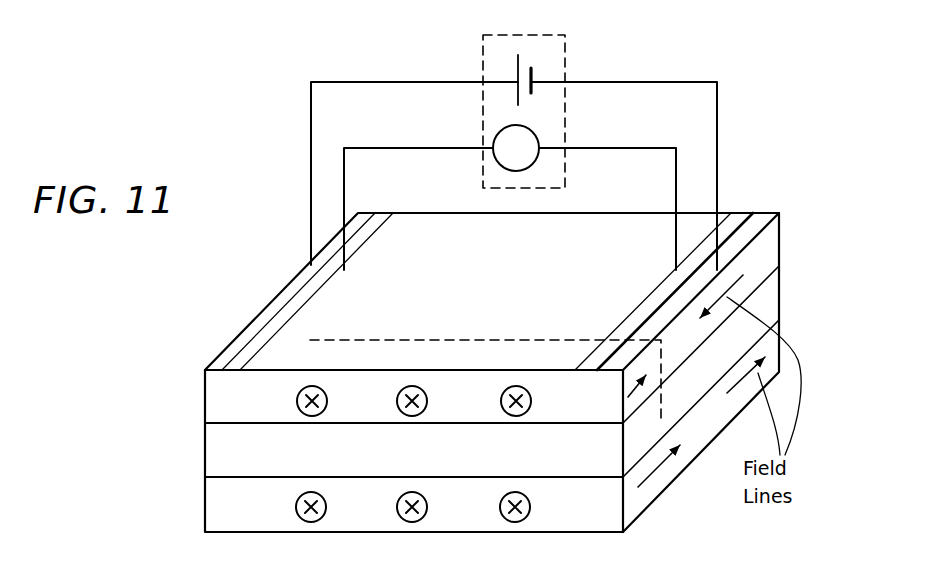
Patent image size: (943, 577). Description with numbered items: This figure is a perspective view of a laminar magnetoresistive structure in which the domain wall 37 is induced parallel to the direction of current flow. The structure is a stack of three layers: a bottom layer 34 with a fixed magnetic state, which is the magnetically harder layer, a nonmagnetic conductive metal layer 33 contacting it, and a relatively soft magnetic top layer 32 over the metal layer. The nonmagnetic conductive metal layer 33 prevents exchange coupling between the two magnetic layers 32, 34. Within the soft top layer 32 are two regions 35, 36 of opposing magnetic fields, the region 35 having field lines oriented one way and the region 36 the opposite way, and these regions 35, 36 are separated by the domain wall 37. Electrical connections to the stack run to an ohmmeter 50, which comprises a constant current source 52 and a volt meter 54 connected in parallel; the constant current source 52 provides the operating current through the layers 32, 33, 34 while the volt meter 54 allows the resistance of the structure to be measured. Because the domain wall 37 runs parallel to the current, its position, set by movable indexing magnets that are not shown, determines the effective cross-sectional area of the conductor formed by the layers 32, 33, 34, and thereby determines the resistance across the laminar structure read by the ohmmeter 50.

The top layer 32 is at (247, 410).
The nonmagnetic conductive metal layer 33 is at (247, 463).
The bottom layer 34 is at (247, 519).
The region 35 is at (648, 429).
The region 36 is at (770, 262).
The domain wall 37 is at (309, 340).
The ohmmeter 50 is at (565, 58).
The constant current source 52 is at (517, 71).
The volt meter 54 is at (493, 143).